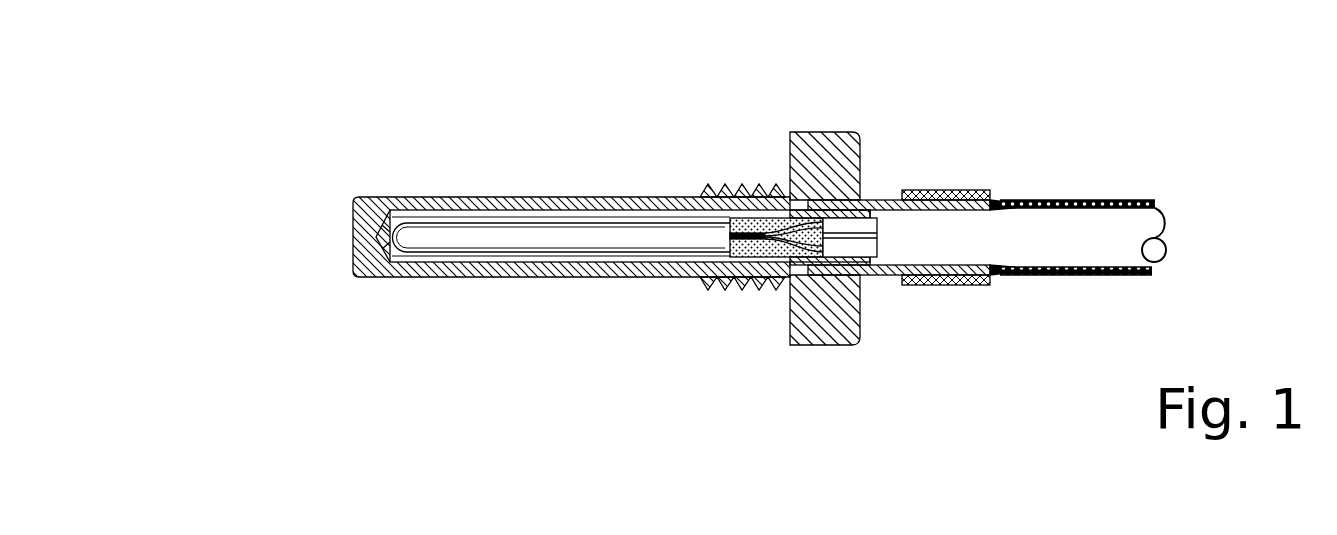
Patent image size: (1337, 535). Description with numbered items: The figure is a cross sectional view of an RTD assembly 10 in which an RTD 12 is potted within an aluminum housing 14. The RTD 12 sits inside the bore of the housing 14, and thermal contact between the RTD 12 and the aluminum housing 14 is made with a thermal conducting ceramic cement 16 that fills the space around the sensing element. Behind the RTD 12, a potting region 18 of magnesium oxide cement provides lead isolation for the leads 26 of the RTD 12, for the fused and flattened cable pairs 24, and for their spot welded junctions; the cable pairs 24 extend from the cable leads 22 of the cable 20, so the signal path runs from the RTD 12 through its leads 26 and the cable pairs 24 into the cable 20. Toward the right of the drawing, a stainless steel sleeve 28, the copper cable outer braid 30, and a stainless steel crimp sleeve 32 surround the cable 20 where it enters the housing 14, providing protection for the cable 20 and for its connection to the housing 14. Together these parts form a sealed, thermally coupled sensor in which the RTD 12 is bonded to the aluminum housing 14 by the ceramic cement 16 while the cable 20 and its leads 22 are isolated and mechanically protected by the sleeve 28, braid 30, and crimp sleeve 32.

The RTD assembly 10 is at (641, 141).
The RTD 12 is at (563, 255).
The aluminum housing 14 is at (483, 198).
The thermal conducting ceramic cement 16 is at (458, 268).
The potting compound 18 is at (755, 255).
The cable 20 is at (1093, 250).
The cable leads 22 is at (860, 226).
The fused and flattened cable pairs 24 is at (783, 197).
The leads 26 is at (733, 197).
The stainless steel sleeve 28 is at (882, 275).
The copper cable outer braid 30 is at (1077, 203).
The stainless steel crimp sleeve 32 is at (970, 190).